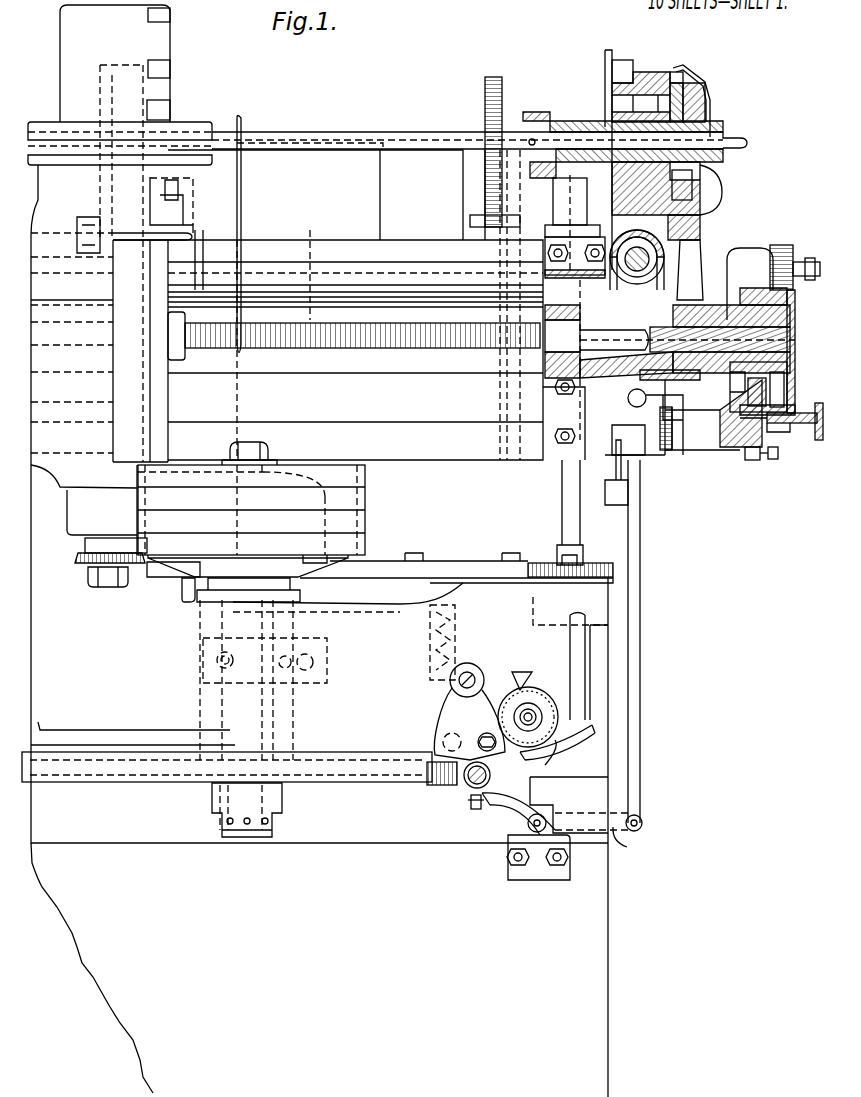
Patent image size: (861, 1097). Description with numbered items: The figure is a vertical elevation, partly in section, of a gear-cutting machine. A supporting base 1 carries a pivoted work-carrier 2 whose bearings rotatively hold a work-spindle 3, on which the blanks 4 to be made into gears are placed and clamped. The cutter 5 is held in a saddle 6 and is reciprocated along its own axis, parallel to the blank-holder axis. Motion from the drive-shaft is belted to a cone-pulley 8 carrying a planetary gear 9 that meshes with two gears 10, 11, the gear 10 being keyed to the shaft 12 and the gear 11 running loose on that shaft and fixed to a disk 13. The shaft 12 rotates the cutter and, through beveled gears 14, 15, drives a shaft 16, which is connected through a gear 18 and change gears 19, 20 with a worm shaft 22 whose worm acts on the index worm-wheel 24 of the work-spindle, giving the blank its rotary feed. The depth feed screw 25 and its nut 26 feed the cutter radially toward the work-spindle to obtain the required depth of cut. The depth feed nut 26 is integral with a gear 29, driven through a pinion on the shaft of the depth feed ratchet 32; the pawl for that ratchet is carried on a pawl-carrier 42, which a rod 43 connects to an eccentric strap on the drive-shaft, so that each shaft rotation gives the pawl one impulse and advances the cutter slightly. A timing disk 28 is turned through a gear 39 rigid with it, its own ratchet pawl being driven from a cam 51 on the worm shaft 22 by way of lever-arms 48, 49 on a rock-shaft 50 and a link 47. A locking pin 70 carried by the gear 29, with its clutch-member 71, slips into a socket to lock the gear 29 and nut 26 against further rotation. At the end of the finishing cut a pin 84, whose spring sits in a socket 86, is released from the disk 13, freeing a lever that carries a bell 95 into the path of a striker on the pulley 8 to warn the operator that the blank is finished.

The supporting base 1 is at (553, 915).
The work-carrier 2 is at (365, 645).
The work-spindle 3 is at (243, 525).
The blanks 4 is at (347, 520).
The cutter 5 is at (82, 565).
The saddle 6 is at (72, 354).
The cone-pulley 8 is at (645, 80).
The planetary gear 9 is at (676, 72).
The gear 10 is at (690, 122).
The gear 11 is at (708, 125).
The shaft 12 is at (418, 143).
The disk 13 is at (704, 88).
The beveled gear 14 is at (545, 160).
The beveled gear 15 is at (558, 180).
The shaft 16 is at (564, 480).
The gear 18 is at (590, 563).
The change gear 19 is at (590, 722).
The change gear 20 is at (518, 695).
The worm shaft 22 is at (470, 790).
The index worm-wheel 24 is at (440, 790).
The depth feed screw 25 is at (545, 338).
The depth feed nut 26 is at (783, 305).
The timing disk 28 is at (748, 455).
The feed-nut gear 29 is at (790, 262).
The depth feed ratchet 32 is at (676, 450).
The gear 39 is at (748, 390).
The pawl-carrier 42 is at (645, 447).
The rod 43 is at (610, 482).
The link 47 is at (640, 598).
The lever-arm 48 is at (632, 850).
The lever-arm 49 is at (498, 818).
The rock-shaft 50 is at (538, 830).
The cam 51 is at (490, 777).
The locking pin 70 is at (770, 461).
The clutch-member 71 is at (808, 413).
The pin 84 is at (700, 232).
The socket 86 is at (713, 258).
The bell 95 is at (720, 182).